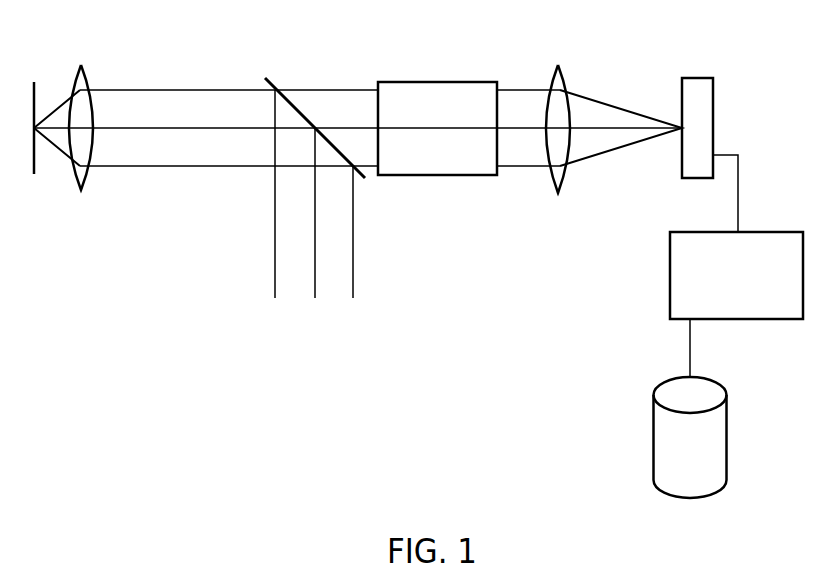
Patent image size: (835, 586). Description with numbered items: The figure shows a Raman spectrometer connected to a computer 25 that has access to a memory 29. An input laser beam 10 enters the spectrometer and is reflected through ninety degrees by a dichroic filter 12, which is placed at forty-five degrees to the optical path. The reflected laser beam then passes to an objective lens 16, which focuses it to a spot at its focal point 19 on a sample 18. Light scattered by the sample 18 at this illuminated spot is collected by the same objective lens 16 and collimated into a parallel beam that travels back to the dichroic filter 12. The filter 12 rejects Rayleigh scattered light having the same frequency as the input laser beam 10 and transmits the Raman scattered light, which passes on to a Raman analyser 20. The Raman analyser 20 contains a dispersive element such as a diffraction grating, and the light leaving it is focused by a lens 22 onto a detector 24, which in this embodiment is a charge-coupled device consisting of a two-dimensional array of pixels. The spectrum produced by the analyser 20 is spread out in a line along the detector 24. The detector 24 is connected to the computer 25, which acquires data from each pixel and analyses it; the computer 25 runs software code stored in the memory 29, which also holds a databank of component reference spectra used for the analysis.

The input laser beam 10 is at (345, 285).
The dichroic filter 12 is at (275, 83).
The objective lens 16 is at (85, 80).
The sample 18 is at (37, 92).
The focal point 19 is at (36, 134).
The Raman analyser 20 is at (417, 82).
The lens 22 is at (565, 80).
The detector 24 is at (713, 100).
The computer 25 is at (777, 232).
The memory 29 is at (727, 453).